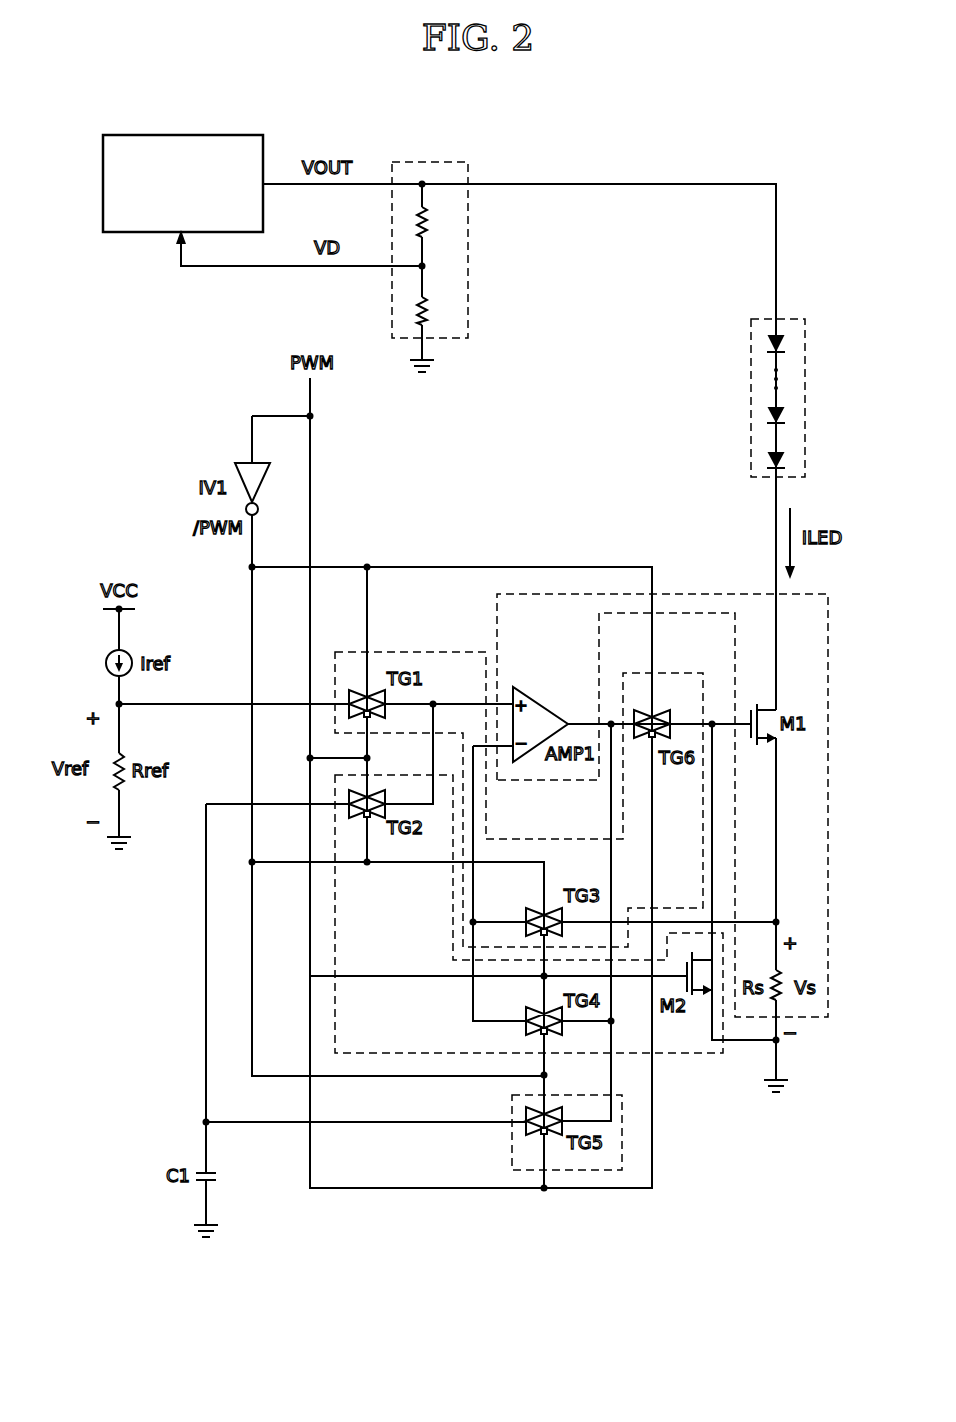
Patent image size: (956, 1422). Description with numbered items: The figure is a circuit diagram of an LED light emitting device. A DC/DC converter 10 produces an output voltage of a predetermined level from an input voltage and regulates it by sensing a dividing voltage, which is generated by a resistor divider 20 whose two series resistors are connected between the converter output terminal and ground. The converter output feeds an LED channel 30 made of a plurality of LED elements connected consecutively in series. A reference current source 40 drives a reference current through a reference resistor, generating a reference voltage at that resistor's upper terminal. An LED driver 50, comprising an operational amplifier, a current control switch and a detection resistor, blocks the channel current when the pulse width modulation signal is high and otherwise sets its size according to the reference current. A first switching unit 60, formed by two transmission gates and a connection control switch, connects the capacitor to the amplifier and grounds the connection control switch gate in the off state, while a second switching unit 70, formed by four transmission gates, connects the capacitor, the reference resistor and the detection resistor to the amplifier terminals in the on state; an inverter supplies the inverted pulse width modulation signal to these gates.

The DC/DC converter 10 is at (203, 135).
The resistor divider 20 is at (468, 265).
The LED channel 30 is at (805, 348).
The reference current source 40 is at (105, 663).
The LED driver 50 is at (828, 857).
The first switching unit 60 is at (690, 1055).
The second switching unit 70 is at (685, 673).